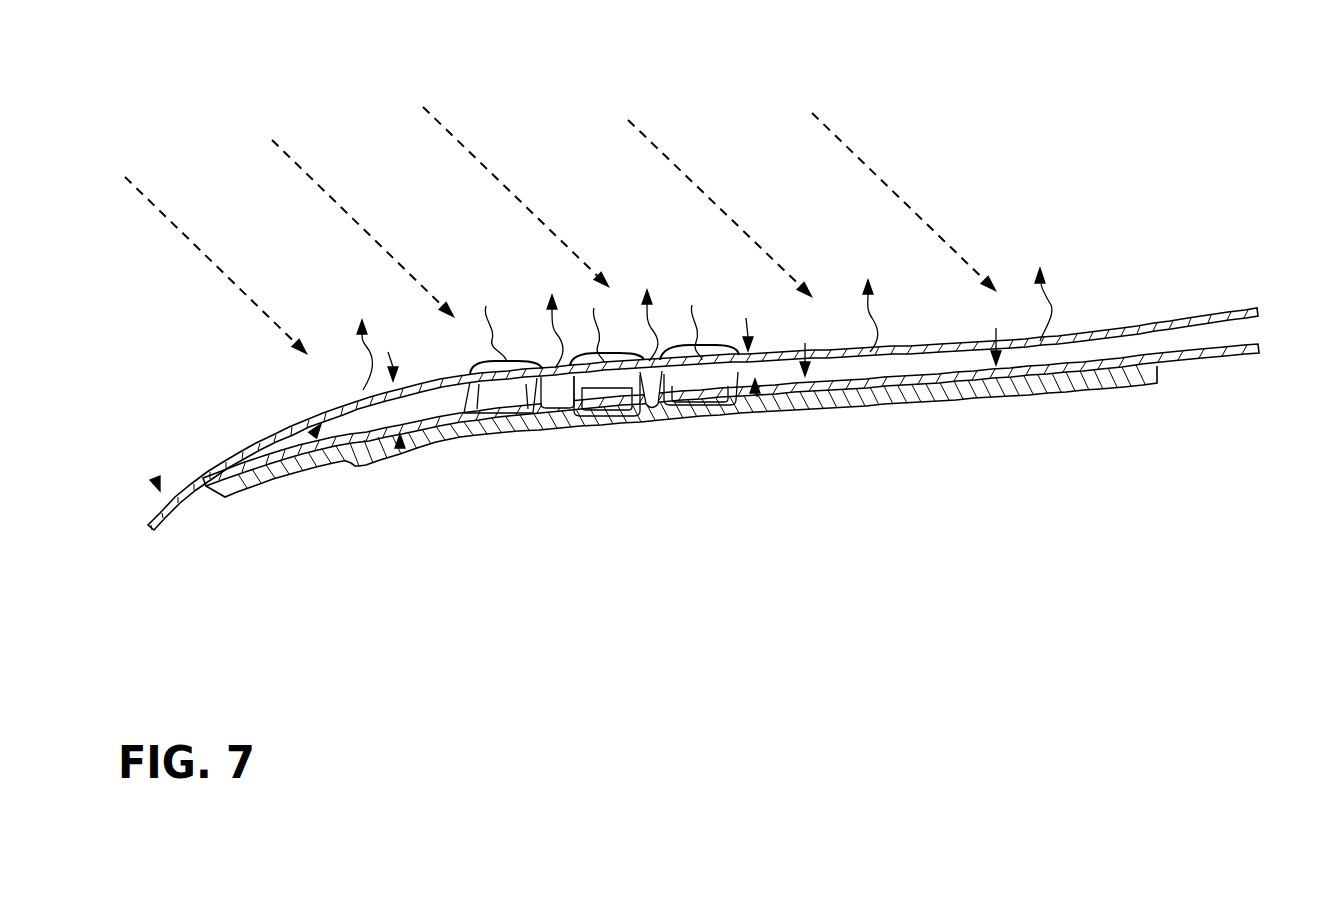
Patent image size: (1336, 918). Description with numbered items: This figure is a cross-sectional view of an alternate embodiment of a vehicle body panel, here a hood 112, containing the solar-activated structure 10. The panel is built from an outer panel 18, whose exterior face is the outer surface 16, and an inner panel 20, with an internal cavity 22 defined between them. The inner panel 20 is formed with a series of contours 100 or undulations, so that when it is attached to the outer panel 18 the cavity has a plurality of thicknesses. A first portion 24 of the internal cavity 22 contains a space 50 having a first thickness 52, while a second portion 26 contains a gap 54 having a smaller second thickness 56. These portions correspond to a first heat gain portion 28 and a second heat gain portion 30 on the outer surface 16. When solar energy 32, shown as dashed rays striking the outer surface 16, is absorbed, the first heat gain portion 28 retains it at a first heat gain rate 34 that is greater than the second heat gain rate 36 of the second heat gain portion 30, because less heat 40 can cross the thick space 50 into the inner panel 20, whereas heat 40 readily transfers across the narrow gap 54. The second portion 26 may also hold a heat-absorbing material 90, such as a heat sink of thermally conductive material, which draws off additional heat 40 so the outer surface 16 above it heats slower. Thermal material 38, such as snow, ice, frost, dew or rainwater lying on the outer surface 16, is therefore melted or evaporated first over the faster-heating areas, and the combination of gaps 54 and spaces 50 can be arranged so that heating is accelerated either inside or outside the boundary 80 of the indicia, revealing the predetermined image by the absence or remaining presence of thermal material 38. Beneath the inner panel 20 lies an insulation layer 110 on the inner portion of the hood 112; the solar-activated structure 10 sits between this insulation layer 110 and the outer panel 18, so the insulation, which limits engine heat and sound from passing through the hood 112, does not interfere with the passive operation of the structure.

The solar-activated structure 10 is at (956, 145).
The outer surface 16 is at (1118, 338).
The outer panel 18 is at (1207, 318).
The inner panel 20 is at (1212, 358).
The internal cavity 22 is at (1262, 326).
The first portion 24 is at (998, 397).
The second portion 26 is at (500, 425).
The first heat gain portion 28 is at (841, 351).
The second heat gain portion 30 is at (715, 355).
The solar energy 32 is at (309, 174).
The first heat gain rate 34 is at (996, 330).
The second heat gain rate 36 is at (497, 340).
The thermal material 38 is at (622, 355).
The heat 40 is at (1051, 305).
The space 50 is at (313, 435).
The first thickness 52 is at (400, 448).
The gap 54 is at (650, 408).
The second thickness 56 is at (757, 397).
The boundary 80 is at (432, 384).
The heat-absorbing material 90 is at (562, 417).
The contours 100 is at (627, 413).
The insulation layer 110 is at (865, 402).
The hood 112 is at (156, 480).